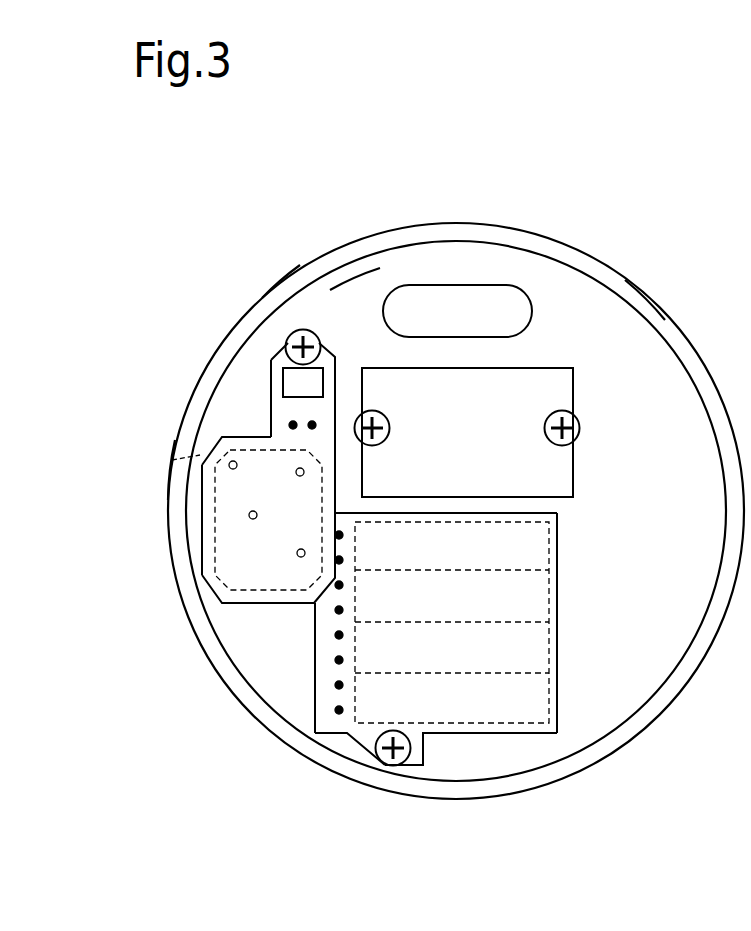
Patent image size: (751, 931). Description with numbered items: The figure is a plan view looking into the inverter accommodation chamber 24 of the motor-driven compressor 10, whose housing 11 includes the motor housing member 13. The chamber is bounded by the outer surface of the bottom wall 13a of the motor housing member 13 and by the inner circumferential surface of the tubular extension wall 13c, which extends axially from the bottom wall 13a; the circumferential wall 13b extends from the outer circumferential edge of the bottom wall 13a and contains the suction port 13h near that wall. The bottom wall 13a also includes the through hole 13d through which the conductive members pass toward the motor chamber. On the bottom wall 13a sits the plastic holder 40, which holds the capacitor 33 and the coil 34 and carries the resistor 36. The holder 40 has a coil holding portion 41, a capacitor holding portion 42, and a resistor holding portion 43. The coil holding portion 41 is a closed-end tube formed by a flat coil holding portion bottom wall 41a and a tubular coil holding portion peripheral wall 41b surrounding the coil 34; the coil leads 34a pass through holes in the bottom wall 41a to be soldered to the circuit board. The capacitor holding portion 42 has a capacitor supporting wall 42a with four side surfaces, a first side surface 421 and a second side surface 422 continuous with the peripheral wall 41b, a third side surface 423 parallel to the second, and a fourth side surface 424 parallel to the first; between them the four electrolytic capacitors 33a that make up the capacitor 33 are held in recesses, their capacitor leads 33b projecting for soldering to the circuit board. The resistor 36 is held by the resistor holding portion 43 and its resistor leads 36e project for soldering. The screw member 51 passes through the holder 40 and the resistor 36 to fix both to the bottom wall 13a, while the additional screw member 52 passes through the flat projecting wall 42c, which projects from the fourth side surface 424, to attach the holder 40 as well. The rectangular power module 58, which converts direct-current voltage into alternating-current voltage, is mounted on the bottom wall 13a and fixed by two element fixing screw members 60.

The motor-driven compressor 10 is at (216, 176).
The housing 11 is at (320, 258).
The motor housing member 13 is at (521, 242).
The bottom wall 13a is at (360, 285).
The circumferential wall 13b is at (279, 283).
The extension wall 13c is at (645, 297).
The through hole 13d is at (529, 321).
The suction port 13h is at (172, 460).
The inverter accommodation chamber 24 is at (457, 296).
The capacitor 33 is at (558, 547).
The electrolytic capacitor 33a is at (556, 692).
The capacitor lead 33b is at (345, 636).
The coil 34 is at (215, 503).
The coil lead 34a is at (300, 477).
The resistor 36 is at (292, 383).
The resistor lead 36e is at (293, 419).
The holder 40 is at (212, 596).
The coil holding portion 41 is at (207, 447).
The coil holding portion bottom wall 41a is at (266, 580).
The coil holding portion peripheral wall 41b is at (202, 553).
The capacitor holding portion 42 is at (315, 680).
The capacitor supporting wall 42a is at (313, 719).
The projecting wall 42c is at (362, 750).
The resistor holding portion 43 is at (271, 353).
The screw member 51 is at (308, 333).
The additional screw member 52 is at (391, 767).
The power module 58 is at (536, 368).
The element fixing screw member 60 is at (580, 428).
The first side surface 421 is at (448, 513).
The second side surface 422 is at (315, 643).
The third side surface 423 is at (557, 622).
The fourth side surface 424 is at (493, 734).